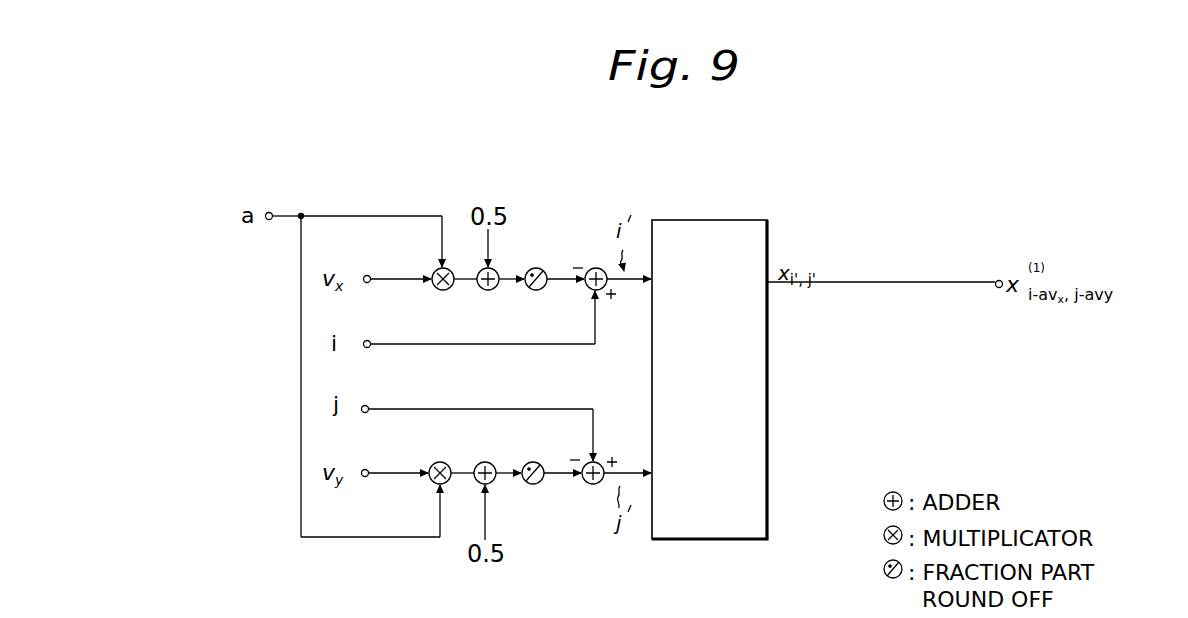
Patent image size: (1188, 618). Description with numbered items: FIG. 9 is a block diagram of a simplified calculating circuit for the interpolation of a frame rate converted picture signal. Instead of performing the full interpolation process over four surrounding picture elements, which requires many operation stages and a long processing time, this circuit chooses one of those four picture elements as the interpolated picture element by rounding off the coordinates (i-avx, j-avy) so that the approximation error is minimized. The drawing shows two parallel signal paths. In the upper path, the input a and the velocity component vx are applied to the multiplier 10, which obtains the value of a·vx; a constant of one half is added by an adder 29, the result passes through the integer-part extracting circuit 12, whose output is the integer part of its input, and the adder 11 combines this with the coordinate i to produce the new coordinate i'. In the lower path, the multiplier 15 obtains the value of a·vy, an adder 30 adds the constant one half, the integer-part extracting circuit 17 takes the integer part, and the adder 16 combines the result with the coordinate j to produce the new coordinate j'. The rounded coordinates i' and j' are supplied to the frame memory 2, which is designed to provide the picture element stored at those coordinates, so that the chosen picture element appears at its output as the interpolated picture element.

The frame memory 2 is at (770, 221).
The multiplier 10 is at (437, 290).
The adder 29 is at (485, 290).
The integer-part extracting circuit 12 is at (535, 290).
The adder 11 is at (588, 290).
The multiplier 15 is at (433, 463).
The adder 30 is at (481, 463).
The integer-part extracting circuit 17 is at (528, 463).
The adder 16 is at (587, 463).